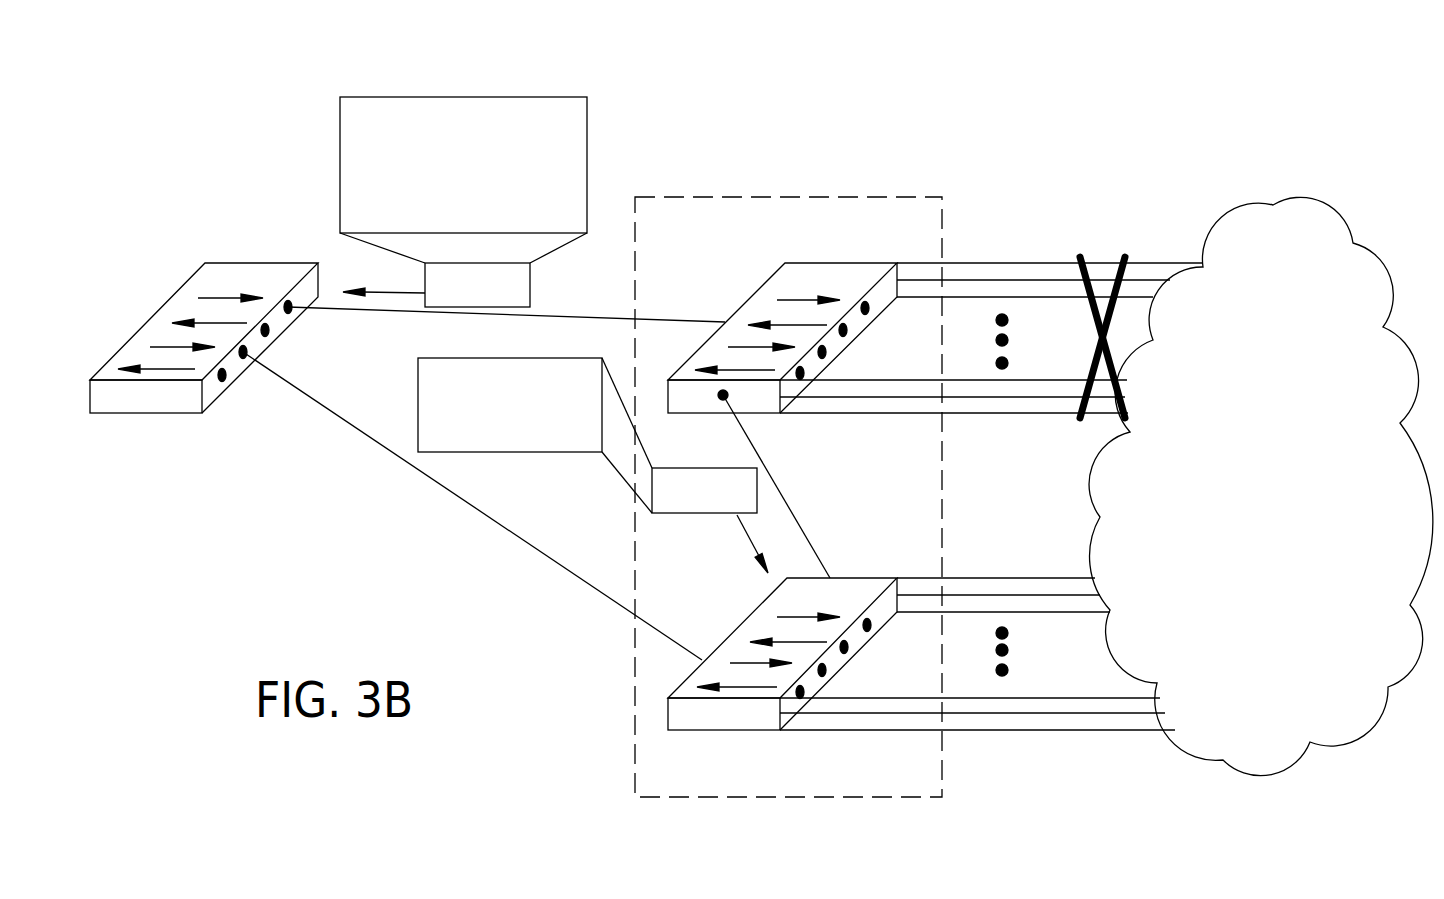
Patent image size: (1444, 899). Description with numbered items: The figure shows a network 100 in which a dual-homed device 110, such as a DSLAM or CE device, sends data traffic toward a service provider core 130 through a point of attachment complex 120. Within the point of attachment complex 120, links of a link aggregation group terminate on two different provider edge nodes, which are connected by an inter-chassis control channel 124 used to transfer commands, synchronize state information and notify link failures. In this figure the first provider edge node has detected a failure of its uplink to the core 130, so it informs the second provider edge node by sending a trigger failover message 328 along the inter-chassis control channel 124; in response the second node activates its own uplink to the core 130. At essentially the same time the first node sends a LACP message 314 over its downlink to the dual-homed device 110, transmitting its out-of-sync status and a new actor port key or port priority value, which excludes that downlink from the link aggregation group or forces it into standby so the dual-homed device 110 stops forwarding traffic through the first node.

The network 100 is at (160, 186).
The DHD 110 is at (252, 275).
The LACP message 314 is at (408, 97).
The point of attachment (POA) complex 120 is at (635, 233).
The inter-chassis control channel (ICC) 124 is at (775, 472).
The core 130 is at (1313, 240).
The trigger failover message 328 is at (452, 452).